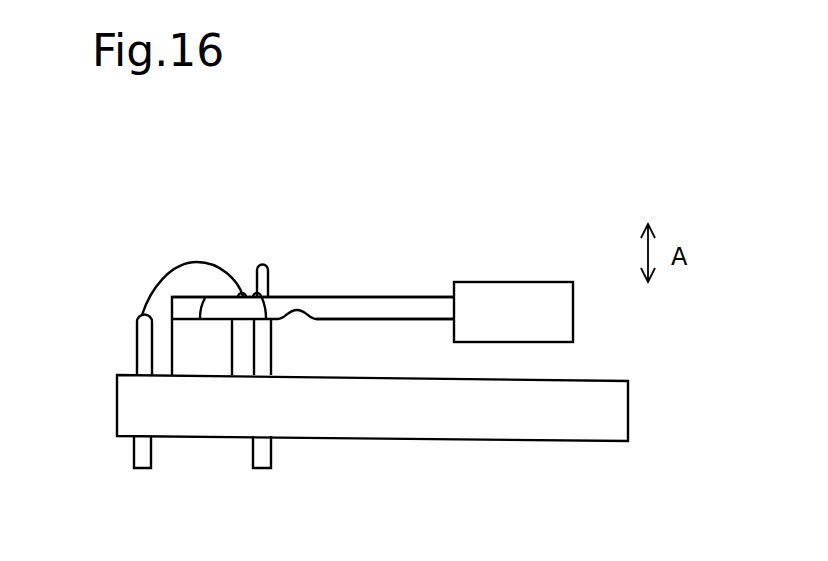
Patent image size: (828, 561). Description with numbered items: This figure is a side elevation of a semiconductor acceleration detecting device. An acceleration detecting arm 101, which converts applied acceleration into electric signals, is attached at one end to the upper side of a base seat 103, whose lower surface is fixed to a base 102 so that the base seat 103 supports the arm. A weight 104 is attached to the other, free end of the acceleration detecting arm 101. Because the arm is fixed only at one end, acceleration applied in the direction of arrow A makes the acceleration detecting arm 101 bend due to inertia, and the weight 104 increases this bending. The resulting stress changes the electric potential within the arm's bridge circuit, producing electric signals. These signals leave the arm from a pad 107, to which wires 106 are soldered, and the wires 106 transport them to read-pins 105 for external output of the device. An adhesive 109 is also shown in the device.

The acceleration detecting arm 101 is at (393, 308).
The base 102 is at (597, 402).
The base seat 103 is at (203, 363).
The weight 104 is at (520, 307).
The read-pins 105 is at (140, 357).
The wires 106 is at (150, 285).
The pad 107 is at (245, 291).
The adhesive 109 is at (203, 303).